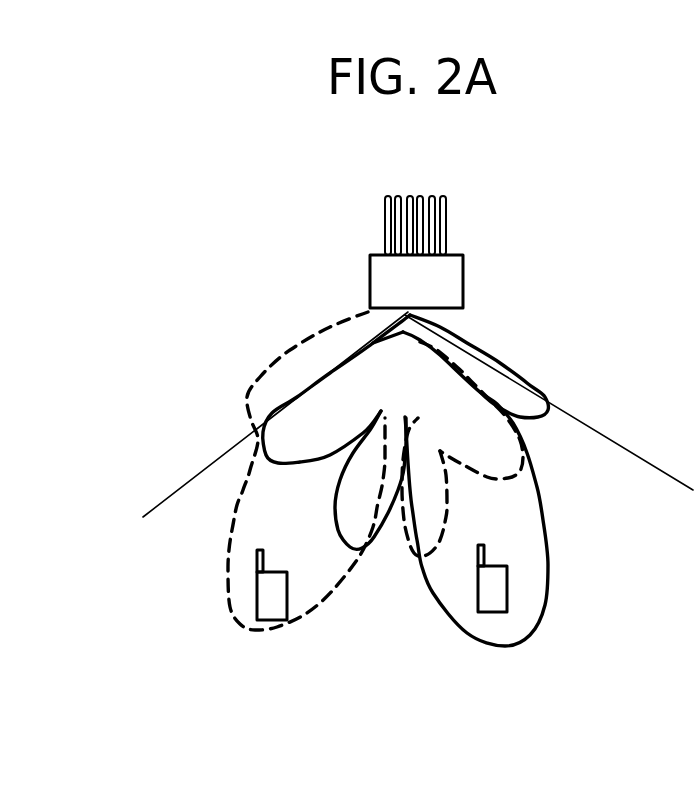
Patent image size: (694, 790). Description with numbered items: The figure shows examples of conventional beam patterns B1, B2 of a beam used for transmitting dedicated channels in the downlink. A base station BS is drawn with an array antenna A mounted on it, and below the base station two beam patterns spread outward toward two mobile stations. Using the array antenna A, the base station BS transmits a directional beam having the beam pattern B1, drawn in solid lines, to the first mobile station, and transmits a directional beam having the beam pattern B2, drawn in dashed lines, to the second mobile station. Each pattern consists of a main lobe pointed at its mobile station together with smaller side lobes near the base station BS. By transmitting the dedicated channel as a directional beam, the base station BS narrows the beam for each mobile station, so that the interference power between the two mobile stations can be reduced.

The array antenna A is at (383, 222).
The base station BS is at (416, 281).
The beam pattern B1 is at (548, 543).
The beam pattern B2 is at (228, 557).